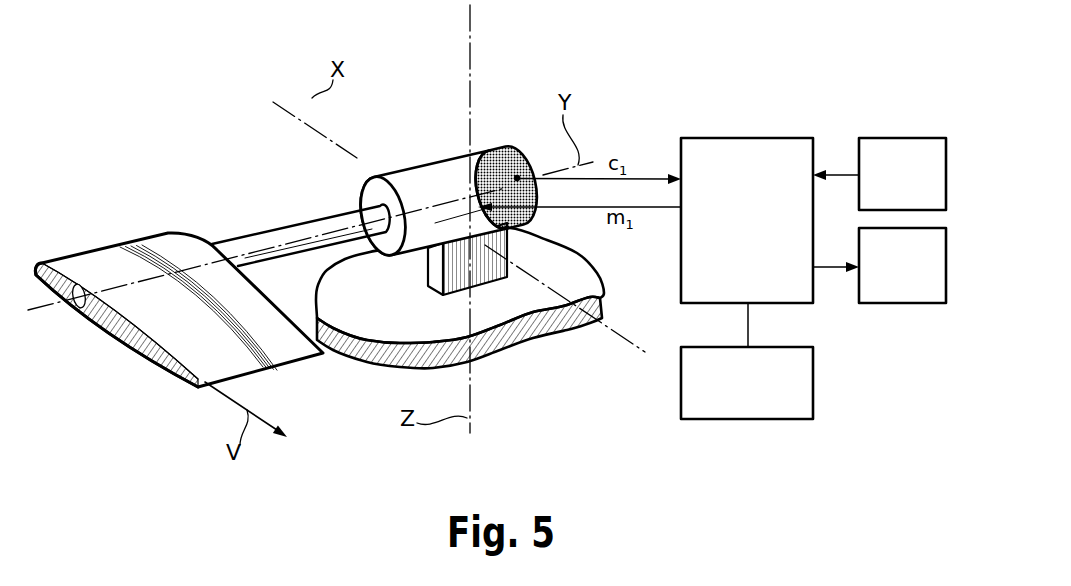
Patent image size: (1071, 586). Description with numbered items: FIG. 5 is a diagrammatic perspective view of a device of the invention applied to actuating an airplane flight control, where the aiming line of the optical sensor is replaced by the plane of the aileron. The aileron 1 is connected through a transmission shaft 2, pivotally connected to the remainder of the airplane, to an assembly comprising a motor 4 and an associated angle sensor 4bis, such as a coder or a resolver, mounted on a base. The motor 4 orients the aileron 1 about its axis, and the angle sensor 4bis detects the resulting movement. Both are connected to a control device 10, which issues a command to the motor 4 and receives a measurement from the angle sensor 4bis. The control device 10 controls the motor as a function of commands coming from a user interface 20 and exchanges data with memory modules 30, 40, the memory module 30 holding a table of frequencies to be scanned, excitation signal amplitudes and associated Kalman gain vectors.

The aileron 1 is at (112, 262).
The transmission shaft 2 is at (276, 237).
The motor 4 is at (442, 177).
The angle sensor 4bis is at (507, 145).
The control device 10 is at (747, 220).
The user interface 20 is at (747, 383).
The memory module 30 is at (902, 174).
The memory module 40 is at (902, 265).